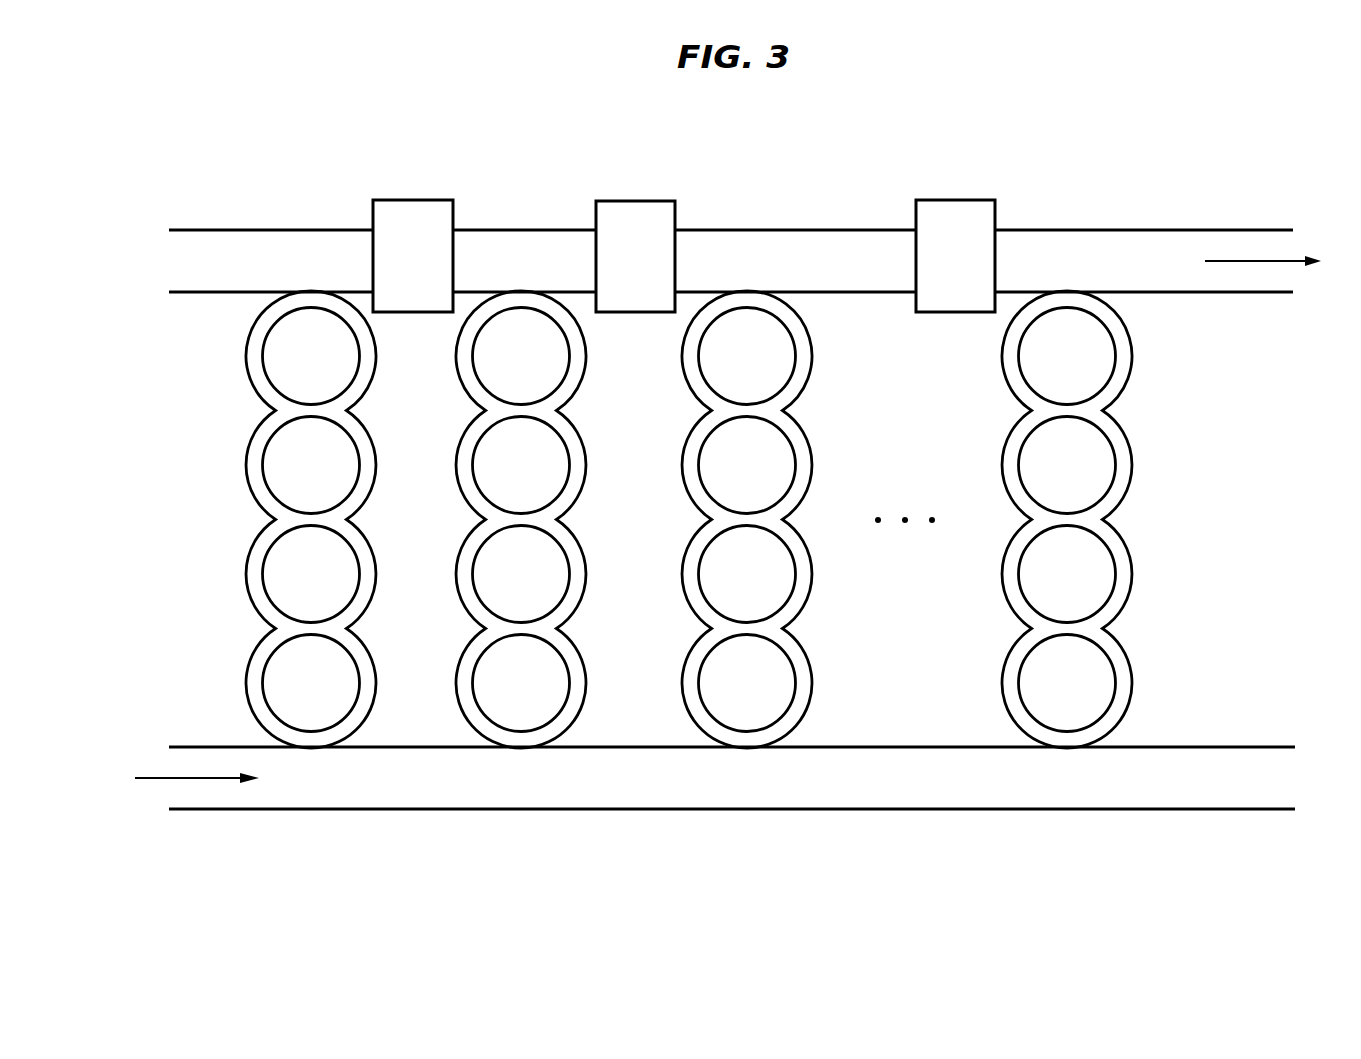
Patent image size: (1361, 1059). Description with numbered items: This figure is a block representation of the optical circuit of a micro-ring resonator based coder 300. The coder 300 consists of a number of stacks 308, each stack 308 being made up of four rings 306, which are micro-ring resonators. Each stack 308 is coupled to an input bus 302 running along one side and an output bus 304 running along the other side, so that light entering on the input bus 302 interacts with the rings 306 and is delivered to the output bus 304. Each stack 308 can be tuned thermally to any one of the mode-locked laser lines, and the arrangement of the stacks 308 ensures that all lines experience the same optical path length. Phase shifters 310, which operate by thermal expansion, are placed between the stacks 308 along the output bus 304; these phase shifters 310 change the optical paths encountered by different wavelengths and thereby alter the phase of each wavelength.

The MRR-based coder 300 is at (848, 112).
The input bus 302 is at (328, 798).
The output bus 304 is at (785, 242).
The ring 306 is at (1012, 683).
The stack 308 is at (787, 519).
The phase shifter 310 is at (961, 184).